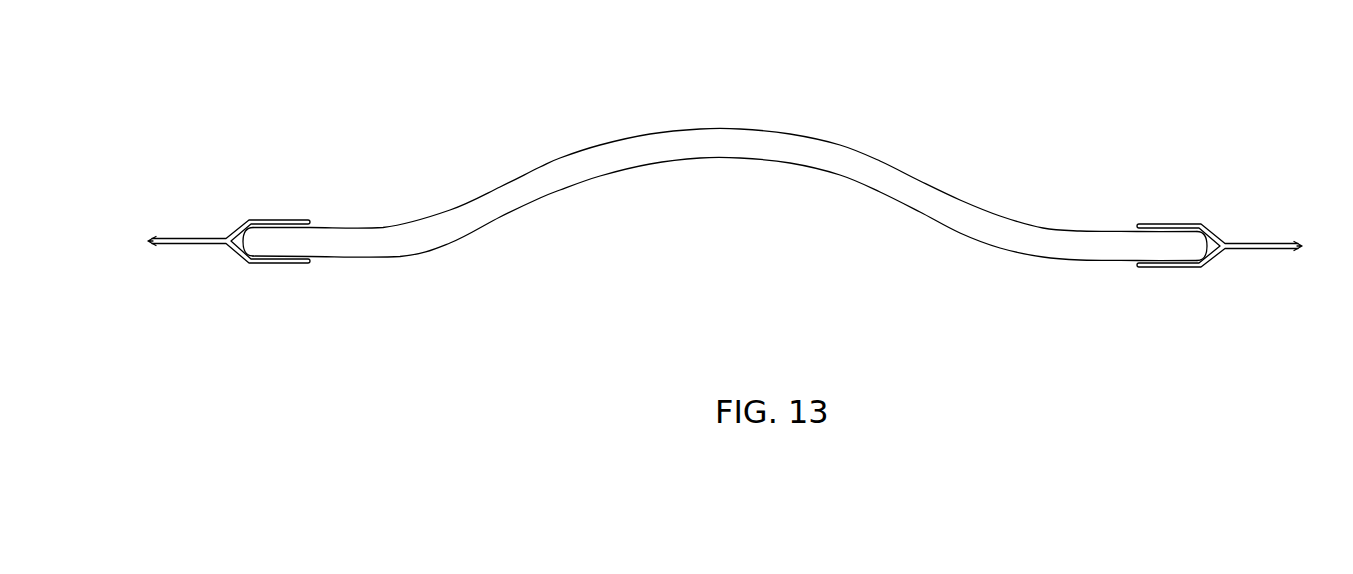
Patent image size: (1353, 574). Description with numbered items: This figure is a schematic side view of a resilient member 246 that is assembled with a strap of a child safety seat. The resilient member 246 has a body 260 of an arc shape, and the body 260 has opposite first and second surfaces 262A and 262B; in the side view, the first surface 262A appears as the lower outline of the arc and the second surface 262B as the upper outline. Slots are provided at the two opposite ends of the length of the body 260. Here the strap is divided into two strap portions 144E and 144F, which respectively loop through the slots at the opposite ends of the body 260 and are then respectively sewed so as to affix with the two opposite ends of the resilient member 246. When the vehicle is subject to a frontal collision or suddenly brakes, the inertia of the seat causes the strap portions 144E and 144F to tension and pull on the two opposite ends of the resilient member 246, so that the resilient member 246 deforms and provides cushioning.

The strap portion 144E is at (160, 237).
The strap portion 144F is at (1282, 242).
The resilient member 246 is at (698, 207).
The body 260 is at (725, 174).
The first surface 262A is at (600, 180).
The second surface 262B is at (590, 150).